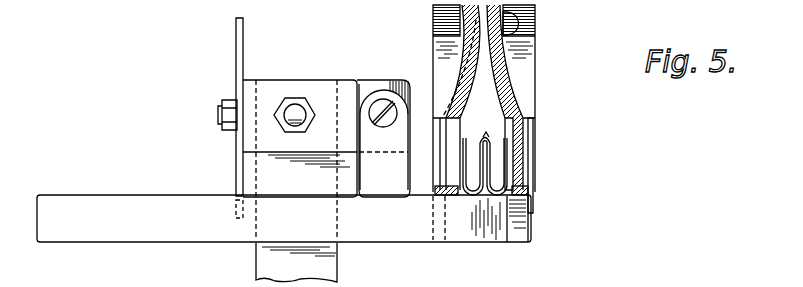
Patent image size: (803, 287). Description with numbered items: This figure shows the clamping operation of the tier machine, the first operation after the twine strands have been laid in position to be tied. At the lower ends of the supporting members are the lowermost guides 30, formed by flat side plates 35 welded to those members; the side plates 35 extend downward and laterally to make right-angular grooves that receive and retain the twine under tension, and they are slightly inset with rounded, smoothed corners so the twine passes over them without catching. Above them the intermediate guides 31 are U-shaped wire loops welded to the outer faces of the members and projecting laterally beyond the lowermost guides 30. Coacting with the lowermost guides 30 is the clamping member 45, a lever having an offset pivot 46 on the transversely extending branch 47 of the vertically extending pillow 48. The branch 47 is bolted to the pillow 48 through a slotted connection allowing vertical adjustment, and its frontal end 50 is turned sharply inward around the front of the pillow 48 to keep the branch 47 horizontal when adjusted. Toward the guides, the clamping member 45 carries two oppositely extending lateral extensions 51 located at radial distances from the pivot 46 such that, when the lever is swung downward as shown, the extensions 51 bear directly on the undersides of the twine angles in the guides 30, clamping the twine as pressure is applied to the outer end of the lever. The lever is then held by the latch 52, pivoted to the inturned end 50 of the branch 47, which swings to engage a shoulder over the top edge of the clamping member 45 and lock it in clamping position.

The lowermost guides 30 is at (534, 147).
The intermediate guides 31 is at (436, 18).
The flat side plates 35 is at (438, 133).
The clamping member 45 is at (162, 172).
The offset pivot 46 is at (378, 101).
The transversely extending branch 47 is at (343, 81).
The pillow 48 is at (264, 265).
The frontal end 50 is at (247, 80).
The lateral extensions 51 is at (530, 231).
The latch 52 is at (236, 47).